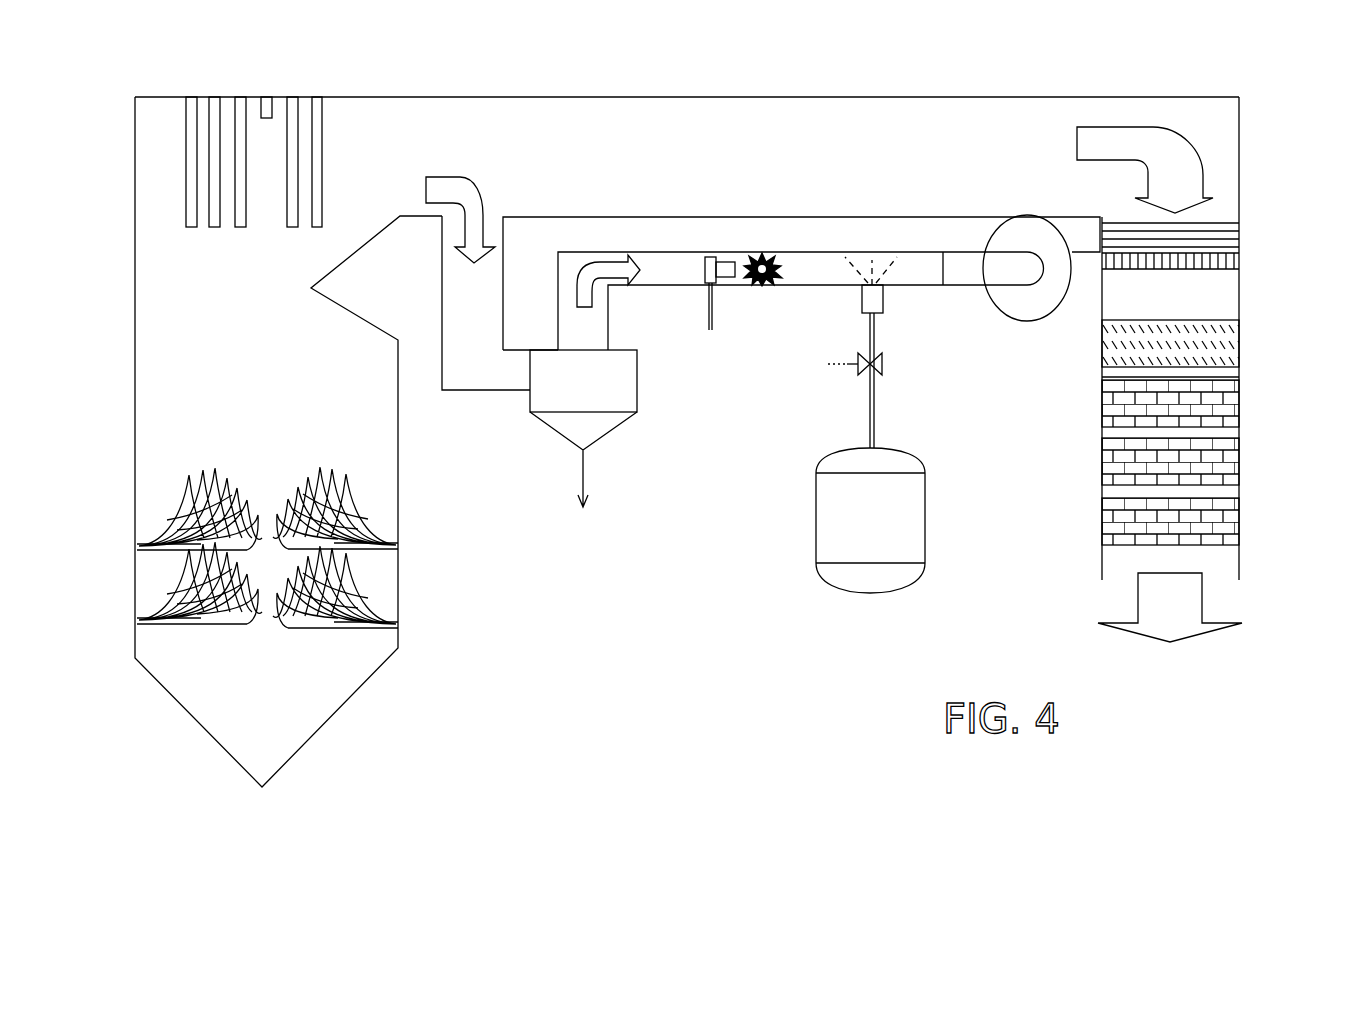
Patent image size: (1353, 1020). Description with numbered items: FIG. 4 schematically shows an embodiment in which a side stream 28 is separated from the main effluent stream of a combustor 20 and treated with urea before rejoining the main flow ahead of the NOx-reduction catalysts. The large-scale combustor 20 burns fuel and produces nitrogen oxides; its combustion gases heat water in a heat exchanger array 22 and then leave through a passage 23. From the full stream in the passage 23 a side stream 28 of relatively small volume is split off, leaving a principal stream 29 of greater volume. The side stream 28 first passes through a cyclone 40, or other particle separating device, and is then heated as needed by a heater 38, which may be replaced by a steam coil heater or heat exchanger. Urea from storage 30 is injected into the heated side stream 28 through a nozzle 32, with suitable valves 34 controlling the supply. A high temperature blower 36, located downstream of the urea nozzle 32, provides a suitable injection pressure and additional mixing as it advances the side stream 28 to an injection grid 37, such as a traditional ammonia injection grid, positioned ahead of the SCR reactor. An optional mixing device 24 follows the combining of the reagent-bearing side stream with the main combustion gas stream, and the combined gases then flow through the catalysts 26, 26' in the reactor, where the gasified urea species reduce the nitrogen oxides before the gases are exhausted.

The combustor 20 is at (248, 472).
The heat exchanger array 22 is at (191, 208).
The passage 23 is at (423, 141).
The mixing device 24 is at (1202, 328).
The NOx-reduction catalyst 26 is at (1137, 544).
The NOx-reduction catalyst 26' is at (1129, 481).
The side stream 28 is at (442, 252).
The principal stream 29 is at (765, 172).
The storage 30 is at (853, 556).
The nozzle 32 is at (883, 297).
The valves 34 is at (835, 364).
The high temperature blower 36 is at (1013, 253).
The injection grid 37 is at (1212, 253).
The heater 38 is at (705, 316).
The cyclone 40 is at (567, 399).